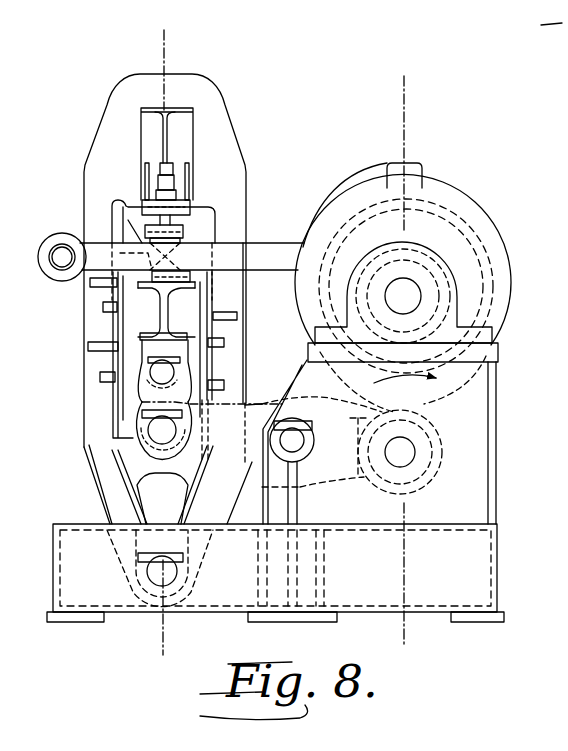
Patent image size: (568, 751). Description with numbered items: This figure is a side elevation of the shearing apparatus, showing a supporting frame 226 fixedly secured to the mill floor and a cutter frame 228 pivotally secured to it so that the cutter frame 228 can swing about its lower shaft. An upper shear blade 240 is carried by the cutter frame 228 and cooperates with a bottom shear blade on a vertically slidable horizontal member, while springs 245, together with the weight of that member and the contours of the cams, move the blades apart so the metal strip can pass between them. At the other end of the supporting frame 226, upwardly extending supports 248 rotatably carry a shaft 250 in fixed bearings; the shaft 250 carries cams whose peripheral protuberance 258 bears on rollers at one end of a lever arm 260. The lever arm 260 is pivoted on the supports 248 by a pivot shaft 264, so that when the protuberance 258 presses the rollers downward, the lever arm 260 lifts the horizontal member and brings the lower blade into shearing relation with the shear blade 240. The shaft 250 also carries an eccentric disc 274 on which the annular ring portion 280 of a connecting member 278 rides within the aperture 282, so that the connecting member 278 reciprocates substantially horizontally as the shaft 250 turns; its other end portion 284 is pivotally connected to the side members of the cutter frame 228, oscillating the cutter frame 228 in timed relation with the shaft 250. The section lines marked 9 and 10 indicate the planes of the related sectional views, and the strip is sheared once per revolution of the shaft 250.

The section line 9- 9 is at (430, 92).
The section line 10- 10 is at (192, 44).
The supporting frame 226 is at (472, 577).
The cutter frame 228 is at (238, 104).
The shear blade 240 is at (553, 253).
The springs 245 is at (182, 242).
The upwardly extending supports 248 is at (463, 486).
The shaft 250 is at (403, 296).
The peripheral protuberance 258 is at (430, 416).
The lever arm 260 is at (300, 487).
The pivot shaft 264 is at (292, 438).
The eccentric disc 274 is at (360, 245).
The connecting member 278 is at (268, 253).
The annular ring portion 280 is at (420, 200).
The aperture 282 is at (443, 213).
The other end portion 284 is at (55, 282).